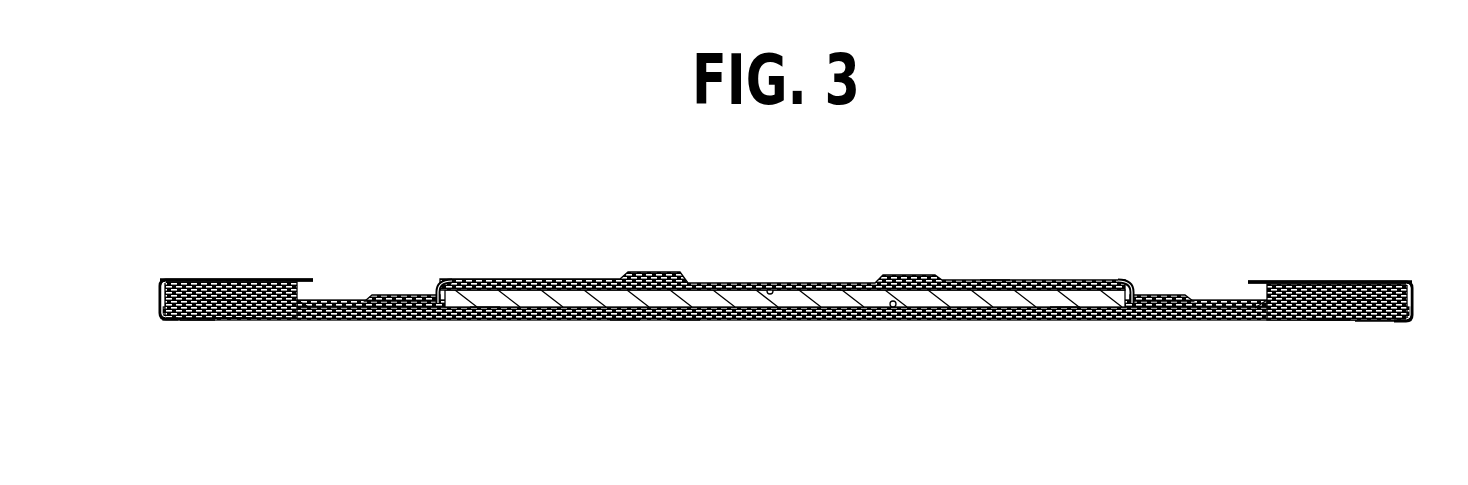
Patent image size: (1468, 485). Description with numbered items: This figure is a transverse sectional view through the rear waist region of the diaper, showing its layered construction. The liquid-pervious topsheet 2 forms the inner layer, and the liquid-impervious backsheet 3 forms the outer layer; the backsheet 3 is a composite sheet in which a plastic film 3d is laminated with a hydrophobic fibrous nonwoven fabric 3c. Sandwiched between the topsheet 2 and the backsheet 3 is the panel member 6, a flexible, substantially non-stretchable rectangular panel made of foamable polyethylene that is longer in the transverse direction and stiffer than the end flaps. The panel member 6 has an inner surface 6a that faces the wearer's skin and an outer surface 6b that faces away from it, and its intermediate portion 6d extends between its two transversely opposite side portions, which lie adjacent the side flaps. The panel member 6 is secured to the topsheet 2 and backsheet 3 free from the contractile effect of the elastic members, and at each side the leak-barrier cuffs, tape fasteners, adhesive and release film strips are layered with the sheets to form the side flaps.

The topsheet 2 is at (840, 308).
The backsheet 3 is at (787, 319).
The hydrophobic fibrous nonwoven fabric 3c is at (622, 311).
The plastic film 3d is at (685, 312).
The panel member 6 is at (713, 291).
The inner surface of the panel member 6a is at (768, 289).
The outer surface of the panel member 6b is at (893, 306).
The intermediate portion of the panel member 6d is at (850, 298).